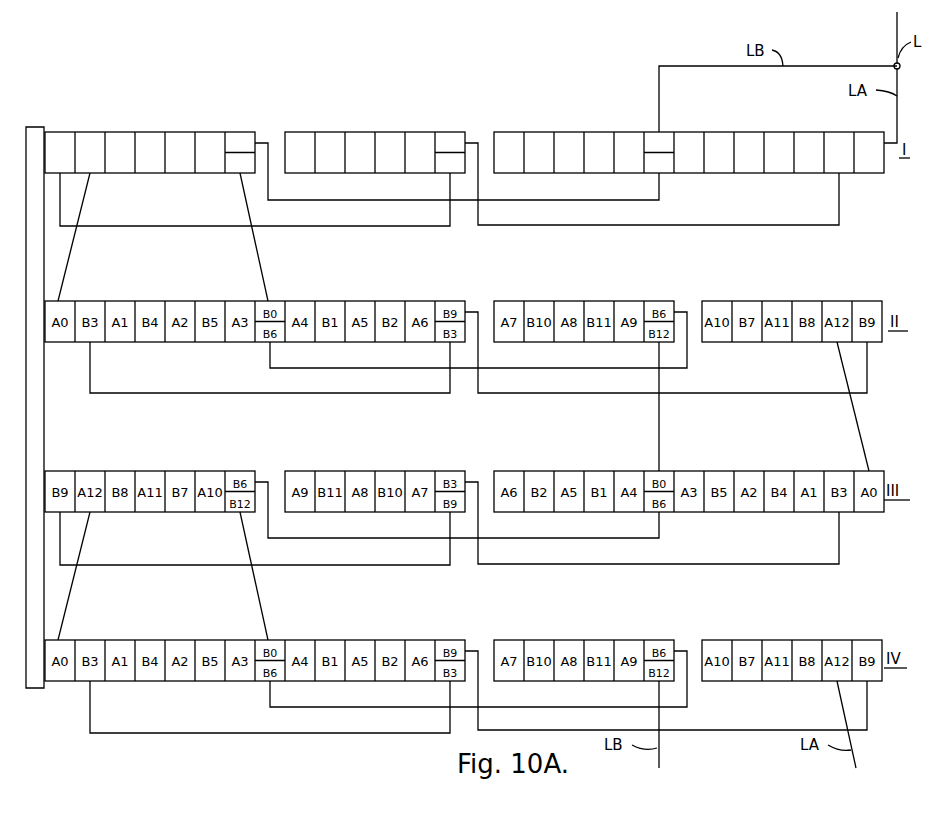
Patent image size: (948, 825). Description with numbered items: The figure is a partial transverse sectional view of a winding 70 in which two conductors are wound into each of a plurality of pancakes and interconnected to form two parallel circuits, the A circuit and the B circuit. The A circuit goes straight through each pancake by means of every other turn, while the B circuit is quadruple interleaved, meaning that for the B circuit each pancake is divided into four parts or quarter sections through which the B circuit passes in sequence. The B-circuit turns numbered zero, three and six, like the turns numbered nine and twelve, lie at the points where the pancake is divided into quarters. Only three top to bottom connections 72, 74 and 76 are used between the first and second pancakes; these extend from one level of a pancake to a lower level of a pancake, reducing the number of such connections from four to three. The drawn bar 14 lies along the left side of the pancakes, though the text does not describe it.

The bus bar / common conductor 14 is at (34, 126).
The winding 70 is at (490, 114).
The top to bottom connection 72 is at (397, 226).
The top to bottom connection 74 is at (534, 225).
The top to bottom connection 76 is at (659, 191).